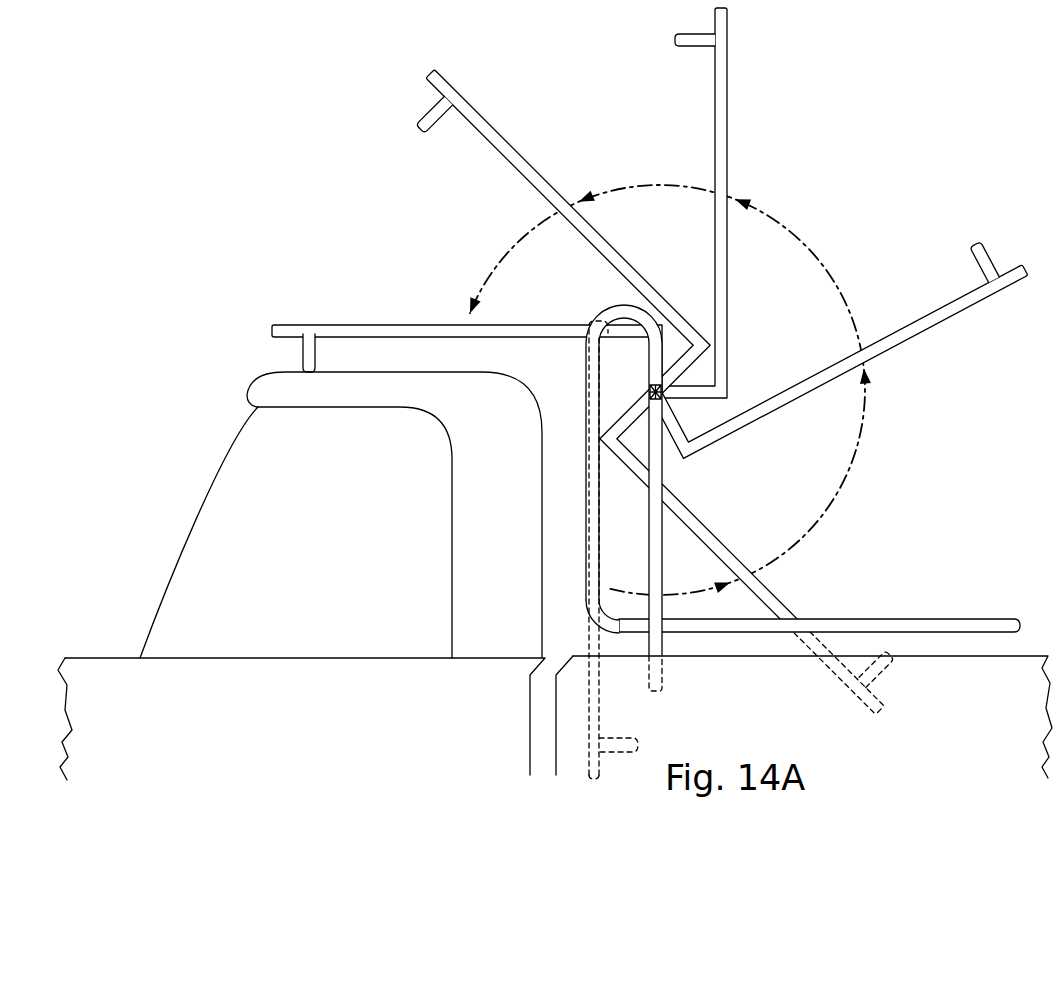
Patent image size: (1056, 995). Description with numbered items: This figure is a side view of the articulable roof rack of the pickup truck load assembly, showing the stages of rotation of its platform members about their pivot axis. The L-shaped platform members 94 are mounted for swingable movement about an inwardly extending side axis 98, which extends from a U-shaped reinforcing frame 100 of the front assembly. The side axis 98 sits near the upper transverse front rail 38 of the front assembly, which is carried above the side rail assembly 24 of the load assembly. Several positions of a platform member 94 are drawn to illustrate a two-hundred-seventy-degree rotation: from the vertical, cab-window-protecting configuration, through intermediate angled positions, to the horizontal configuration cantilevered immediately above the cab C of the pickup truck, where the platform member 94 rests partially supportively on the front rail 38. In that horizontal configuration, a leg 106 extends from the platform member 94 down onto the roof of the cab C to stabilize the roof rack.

The platform member 94 is at (522, 160).
The side rail assembly 24 is at (948, 618).
The front rail 38 is at (589, 338).
The side axis 98 is at (652, 392).
The U-shaped reinforcing frame 100 is at (590, 378).
The leg 106 is at (316, 357).
The cab C is at (257, 394).